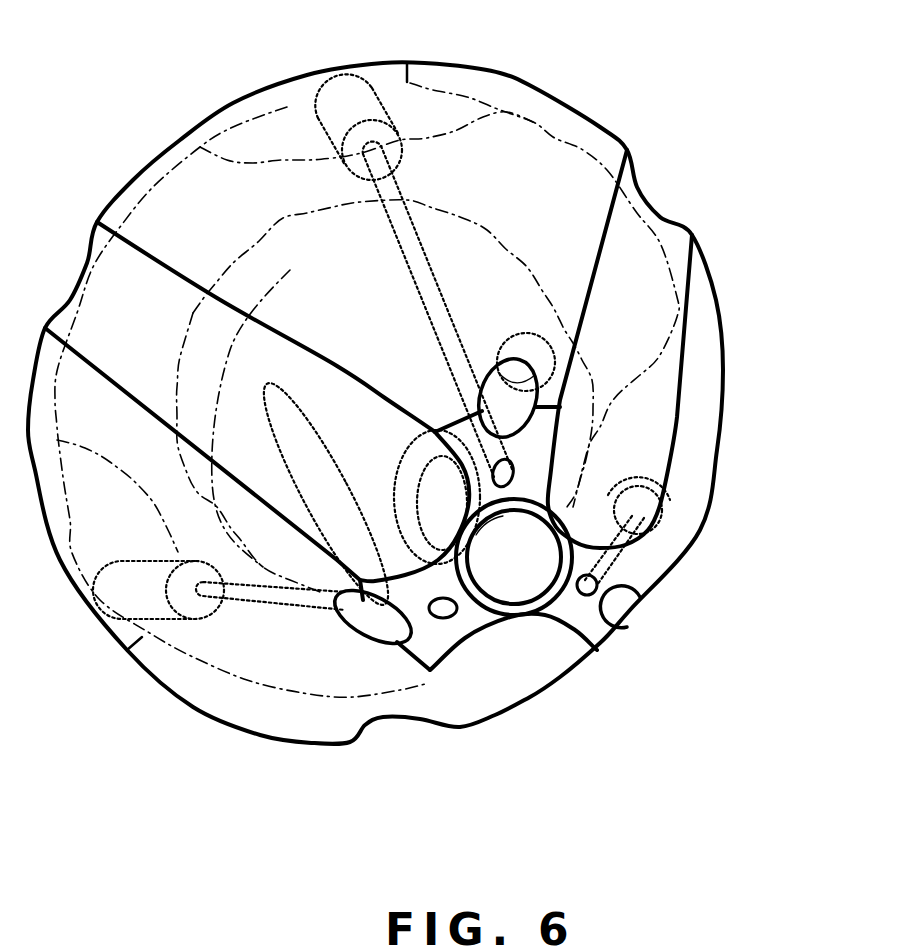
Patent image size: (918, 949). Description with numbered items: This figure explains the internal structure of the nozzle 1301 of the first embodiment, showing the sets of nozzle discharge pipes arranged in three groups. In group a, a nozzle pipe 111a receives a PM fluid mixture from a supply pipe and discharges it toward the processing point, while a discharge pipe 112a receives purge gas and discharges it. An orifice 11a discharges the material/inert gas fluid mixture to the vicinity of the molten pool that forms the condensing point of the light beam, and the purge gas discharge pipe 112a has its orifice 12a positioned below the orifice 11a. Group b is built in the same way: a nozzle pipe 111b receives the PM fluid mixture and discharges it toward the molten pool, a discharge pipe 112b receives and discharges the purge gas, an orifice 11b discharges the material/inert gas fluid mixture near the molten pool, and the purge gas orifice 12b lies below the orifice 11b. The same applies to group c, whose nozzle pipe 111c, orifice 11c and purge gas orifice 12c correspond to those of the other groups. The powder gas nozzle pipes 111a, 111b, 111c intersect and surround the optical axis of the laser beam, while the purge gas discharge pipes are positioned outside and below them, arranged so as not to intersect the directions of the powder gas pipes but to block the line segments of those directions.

The nozzle 1301 is at (83, 97).
The nozzle pipe 111a is at (237, 594).
The discharge pipe 112a is at (323, 507).
The orifice 12a is at (380, 620).
The orifice 11a is at (442, 617).
The nozzle pipe 111b is at (428, 277).
The discharge pipe 112b is at (530, 352).
The orifice 12b is at (505, 408).
The orifice 11b is at (511, 464).
The nozzle pipe 111c is at (647, 508).
The orifice 11c is at (600, 580).
The orifice 12c is at (618, 615).